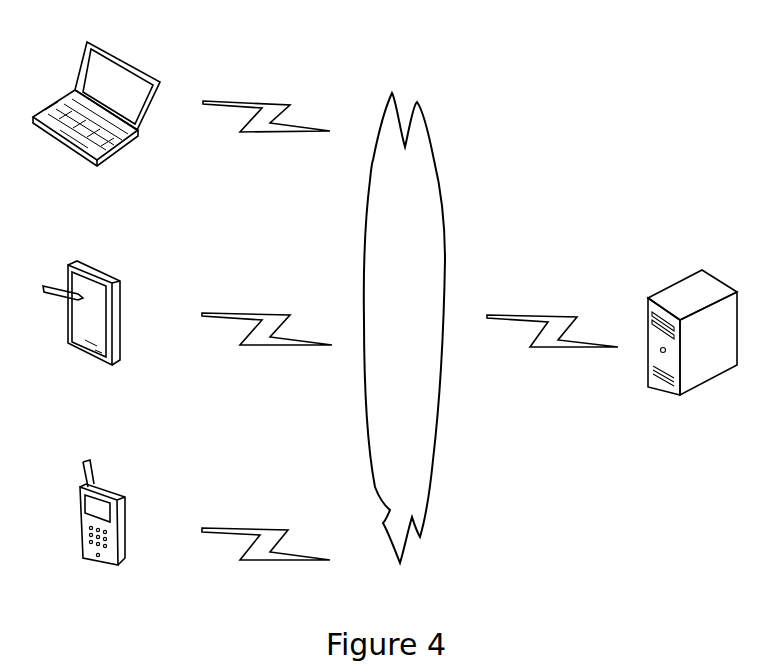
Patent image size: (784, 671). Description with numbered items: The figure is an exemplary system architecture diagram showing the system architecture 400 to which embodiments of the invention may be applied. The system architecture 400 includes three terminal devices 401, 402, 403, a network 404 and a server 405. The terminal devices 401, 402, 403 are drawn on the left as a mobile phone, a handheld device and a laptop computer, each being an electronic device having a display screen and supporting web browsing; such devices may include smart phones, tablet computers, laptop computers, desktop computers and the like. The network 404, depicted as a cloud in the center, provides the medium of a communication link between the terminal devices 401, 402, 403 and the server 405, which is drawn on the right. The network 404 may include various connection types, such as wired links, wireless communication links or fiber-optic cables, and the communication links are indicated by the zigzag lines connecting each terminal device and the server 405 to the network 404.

The system architecture 400 is at (613, 34).
The terminal device 401 is at (102, 531).
The terminal device 402 is at (81, 332).
The terminal device 403 is at (96, 119).
The network 404 is at (404, 328).
The server 405 is at (692, 349).